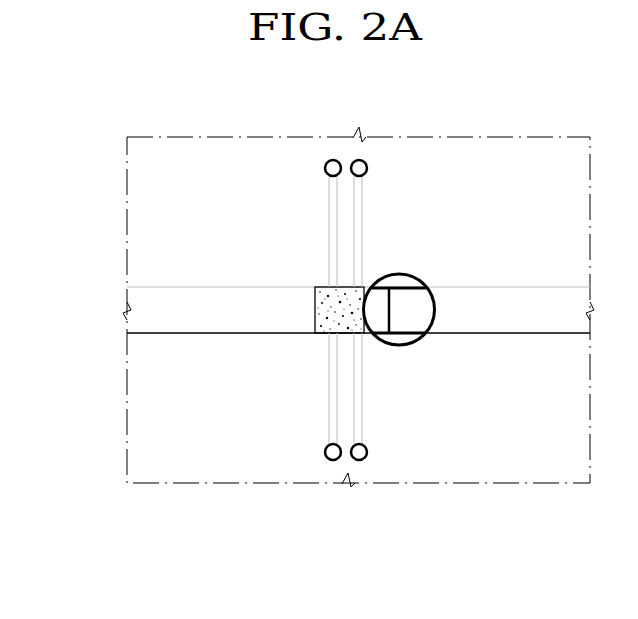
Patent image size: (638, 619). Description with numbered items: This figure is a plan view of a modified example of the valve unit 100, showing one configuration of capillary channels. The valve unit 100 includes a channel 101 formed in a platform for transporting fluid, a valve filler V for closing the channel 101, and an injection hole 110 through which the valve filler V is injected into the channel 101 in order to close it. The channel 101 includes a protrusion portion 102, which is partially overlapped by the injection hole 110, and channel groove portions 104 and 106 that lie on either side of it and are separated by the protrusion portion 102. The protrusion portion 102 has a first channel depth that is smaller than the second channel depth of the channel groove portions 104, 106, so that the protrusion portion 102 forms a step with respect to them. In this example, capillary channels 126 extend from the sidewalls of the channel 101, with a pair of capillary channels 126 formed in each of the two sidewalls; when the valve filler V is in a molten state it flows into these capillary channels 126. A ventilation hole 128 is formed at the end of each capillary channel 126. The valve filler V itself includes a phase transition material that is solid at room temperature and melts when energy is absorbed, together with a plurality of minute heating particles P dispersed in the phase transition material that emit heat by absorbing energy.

The valve unit 100 is at (80, 152).
The channel 101 is at (495, 560).
The protrusion portion 102 is at (346, 333).
The channel groove portion 104 is at (219, 333).
The channel groove portion 106 is at (482, 333).
The injection hole 110 is at (433, 309).
The capillary channels 126 is at (360, 235).
The ventilation hole 128 is at (340, 160).
The valve filler V is at (315, 310).
The heating particles P is at (322, 323).